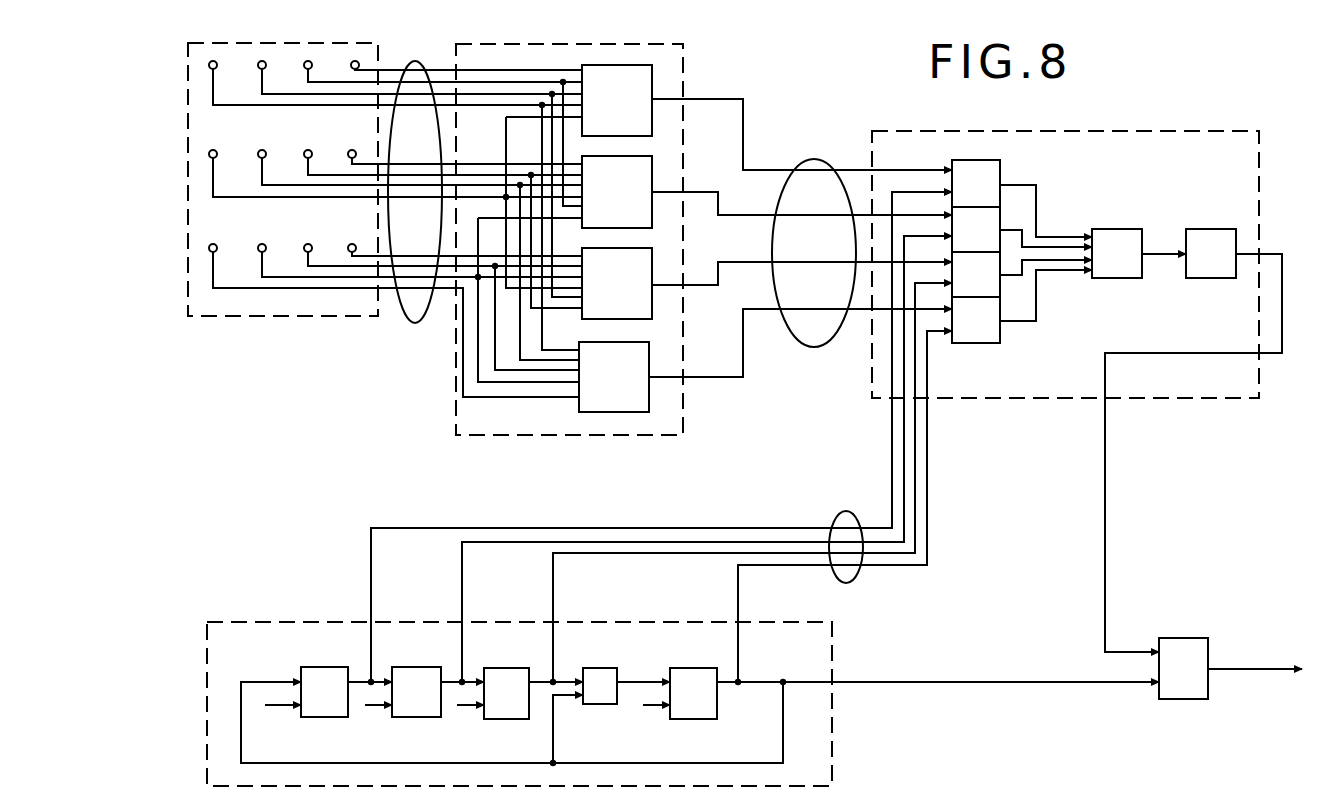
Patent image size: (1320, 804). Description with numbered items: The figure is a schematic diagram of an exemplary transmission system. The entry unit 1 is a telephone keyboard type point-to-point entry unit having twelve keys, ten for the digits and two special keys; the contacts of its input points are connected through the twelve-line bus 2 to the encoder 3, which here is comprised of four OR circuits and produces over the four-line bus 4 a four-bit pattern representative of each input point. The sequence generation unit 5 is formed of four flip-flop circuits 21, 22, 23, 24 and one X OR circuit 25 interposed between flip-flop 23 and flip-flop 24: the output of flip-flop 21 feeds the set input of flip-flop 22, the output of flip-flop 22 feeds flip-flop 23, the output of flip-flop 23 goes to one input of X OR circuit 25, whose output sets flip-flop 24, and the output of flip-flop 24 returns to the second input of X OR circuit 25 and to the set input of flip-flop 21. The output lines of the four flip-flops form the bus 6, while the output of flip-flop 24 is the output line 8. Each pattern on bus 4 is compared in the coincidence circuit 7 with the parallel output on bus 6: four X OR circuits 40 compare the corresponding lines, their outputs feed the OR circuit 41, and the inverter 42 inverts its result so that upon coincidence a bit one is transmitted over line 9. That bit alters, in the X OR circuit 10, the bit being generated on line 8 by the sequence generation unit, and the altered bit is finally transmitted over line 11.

The entry unit 1 is at (262, 318).
The twelve-line bus 2 is at (412, 325).
The encoder 3 is at (683, 80).
The four-line bus 4 is at (798, 323).
The sequence generation unit 5 is at (519, 663).
The bus 6 is at (838, 512).
The coincidence circuit 7 is at (1069, 236).
The output line 8 is at (960, 682).
The line 9 is at (1107, 518).
The X OR circuit 10 is at (1183, 638).
The line 11 is at (1250, 669).
The flip-flop circuit 21 is at (312, 667).
The flip-flop circuit 22 is at (403, 667).
The flip-flop circuit 23 is at (497, 668).
The flip-flop circuit 24 is at (683, 668).
The X OR circuit 25 is at (598, 668).
The X OR circuits 40 is at (1000, 157).
The OR circuit 41 is at (1142, 229).
The inverter 42 is at (1206, 229).